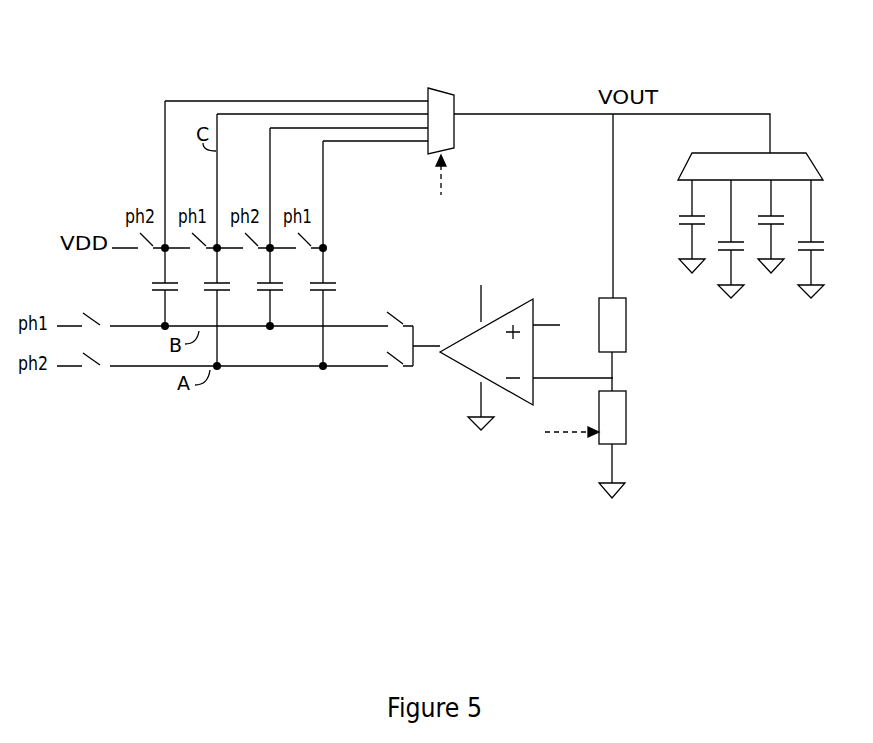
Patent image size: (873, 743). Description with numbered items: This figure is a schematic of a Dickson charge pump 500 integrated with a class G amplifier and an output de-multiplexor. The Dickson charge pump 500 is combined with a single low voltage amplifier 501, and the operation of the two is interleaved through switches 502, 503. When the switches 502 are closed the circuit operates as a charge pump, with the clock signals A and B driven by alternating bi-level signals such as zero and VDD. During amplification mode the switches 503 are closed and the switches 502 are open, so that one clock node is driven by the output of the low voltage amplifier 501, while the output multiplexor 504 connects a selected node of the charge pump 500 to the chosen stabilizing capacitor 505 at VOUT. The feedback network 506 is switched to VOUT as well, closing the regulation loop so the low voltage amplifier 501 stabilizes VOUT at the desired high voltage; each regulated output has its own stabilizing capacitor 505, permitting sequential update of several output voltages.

The Dickson charge pump 500 is at (348, 390).
The low voltage amplifier 501 is at (521, 350).
The switches 502 is at (80, 323).
The switches 503 is at (401, 323).
The output multiplexor 504 is at (444, 127).
The stabilizing capacitor 505 is at (677, 298).
The feedback network 506 is at (640, 285).